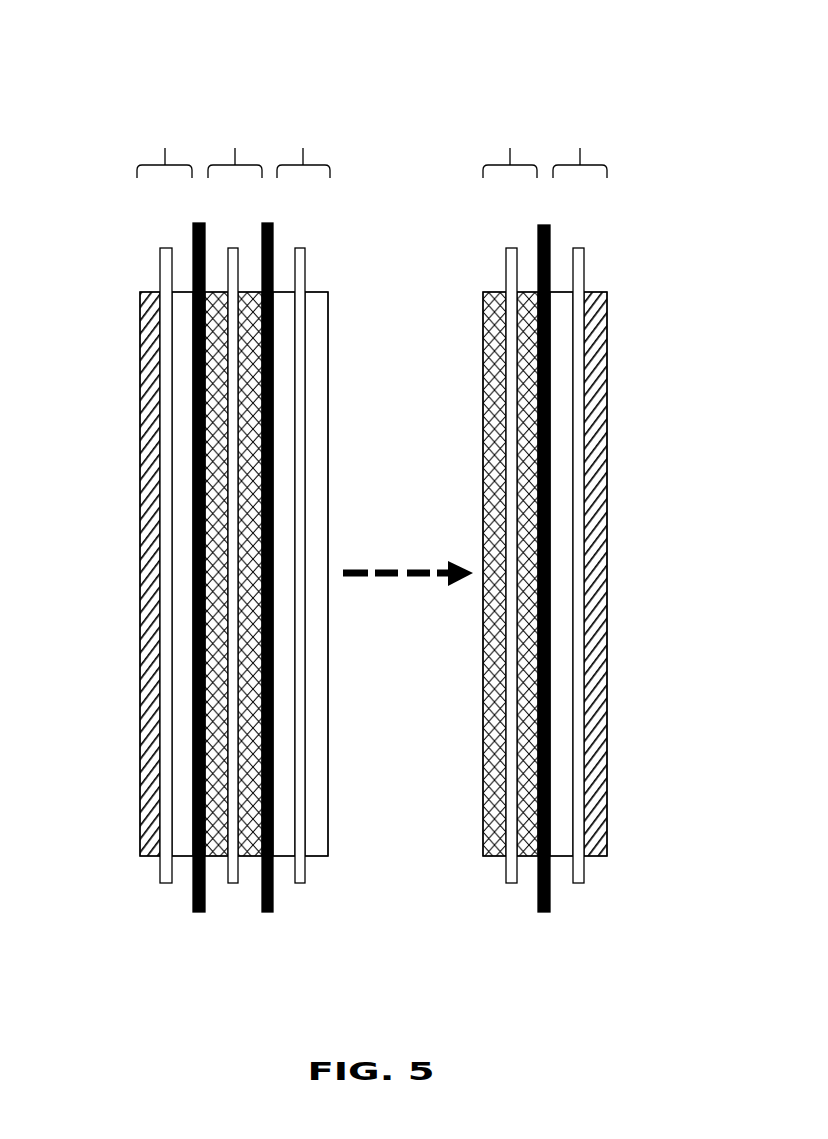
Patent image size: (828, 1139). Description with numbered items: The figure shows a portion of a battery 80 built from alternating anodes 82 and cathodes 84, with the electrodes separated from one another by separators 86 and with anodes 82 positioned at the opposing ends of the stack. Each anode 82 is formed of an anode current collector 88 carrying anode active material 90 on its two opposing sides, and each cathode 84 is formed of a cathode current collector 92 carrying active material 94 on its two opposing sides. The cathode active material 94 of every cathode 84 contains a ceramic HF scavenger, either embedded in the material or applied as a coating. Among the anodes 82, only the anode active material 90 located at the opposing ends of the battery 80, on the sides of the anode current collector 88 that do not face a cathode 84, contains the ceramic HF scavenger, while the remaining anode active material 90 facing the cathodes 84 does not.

The battery 80 is at (458, 79).
The anode 82 is at (372, 149).
The cathode 84 is at (372, 149).
The separator 86 is at (193, 898).
The anode current collector 88 is at (160, 869).
The anode active material 90 is at (152, 292).
The cathode current collector 92 is at (232, 883).
The cathode active material 94 is at (217, 292).